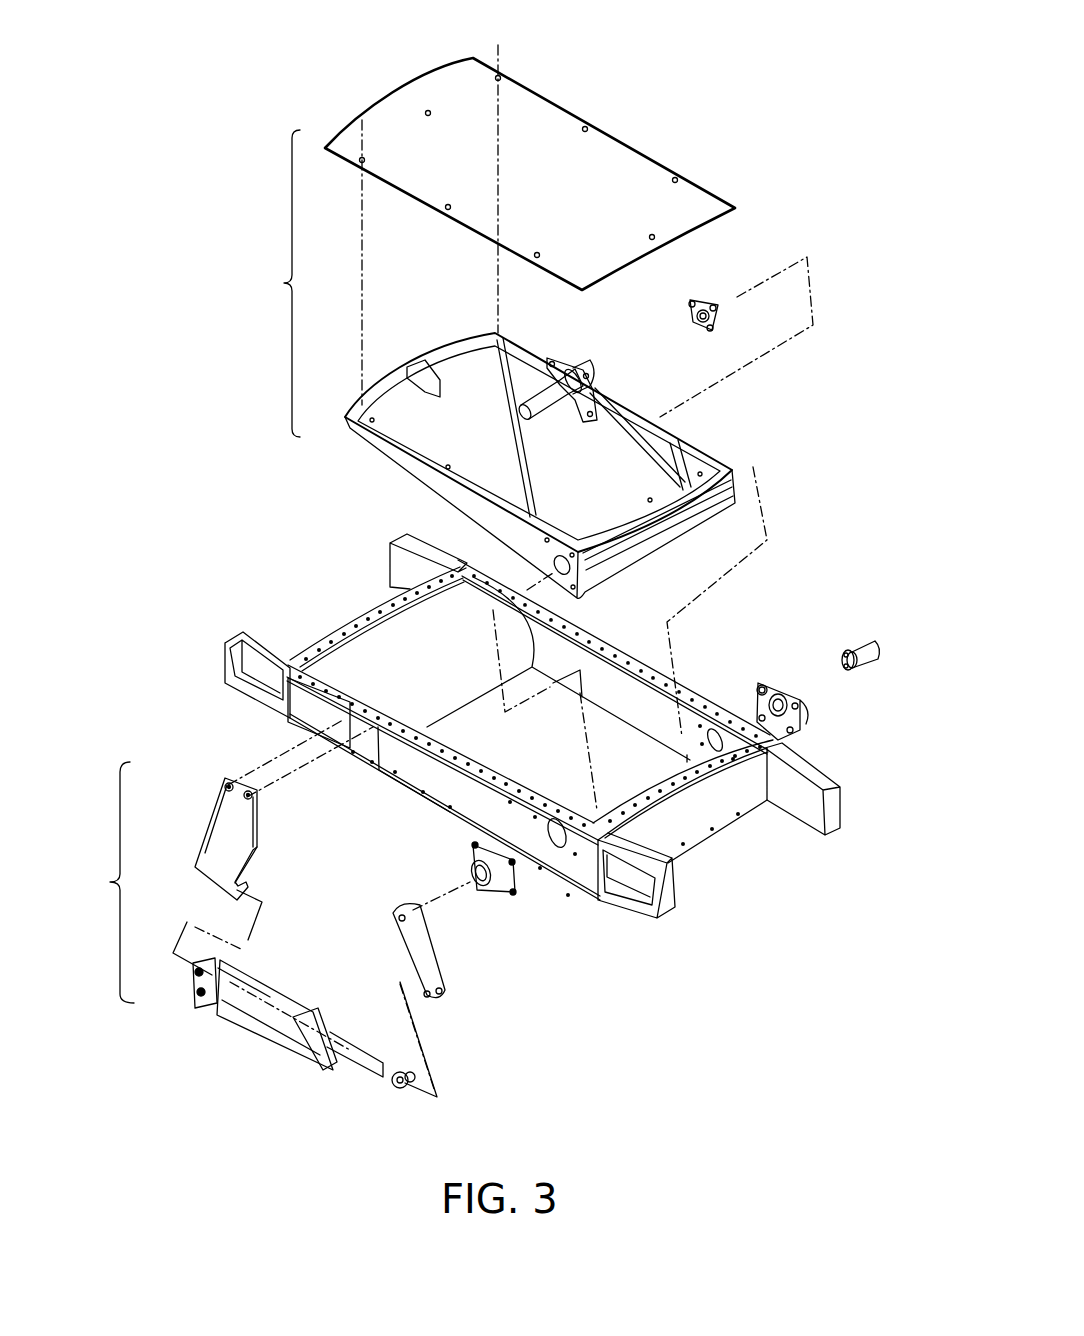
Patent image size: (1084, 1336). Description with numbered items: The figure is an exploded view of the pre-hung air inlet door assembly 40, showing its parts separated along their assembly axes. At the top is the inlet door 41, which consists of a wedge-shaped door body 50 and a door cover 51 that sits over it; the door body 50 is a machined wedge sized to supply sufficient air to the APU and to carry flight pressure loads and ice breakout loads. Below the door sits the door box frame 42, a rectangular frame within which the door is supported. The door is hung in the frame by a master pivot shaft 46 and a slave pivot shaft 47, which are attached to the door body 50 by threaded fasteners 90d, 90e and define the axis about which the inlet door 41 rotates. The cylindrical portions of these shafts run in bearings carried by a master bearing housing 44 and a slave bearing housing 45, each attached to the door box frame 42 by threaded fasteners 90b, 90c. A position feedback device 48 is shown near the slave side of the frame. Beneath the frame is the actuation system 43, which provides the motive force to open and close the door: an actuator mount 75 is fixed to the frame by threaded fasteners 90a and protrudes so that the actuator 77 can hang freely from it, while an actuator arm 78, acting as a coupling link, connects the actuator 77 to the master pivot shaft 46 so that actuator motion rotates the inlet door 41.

The pre-hung air inlet door assembly 40 is at (128, 195).
The inlet door 41 is at (270, 283).
The door box frame 42 is at (243, 640).
The actuation system 43 is at (98, 882).
The master bearing housing 44 is at (520, 884).
The slave bearing housing 45 is at (798, 703).
The master pivot shaft 46 is at (545, 410).
The slave pivot shaft 47 is at (722, 298).
The position feedback device 48 is at (878, 652).
The door body 50 is at (415, 472).
The door cover 51 is at (446, 207).
The actuator mount 75 is at (208, 840).
The actuator 77 is at (278, 996).
The actuator arm 78 is at (410, 950).
The threaded fasteners 90a is at (225, 790).
The threaded fasteners 90b is at (472, 846).
The threaded fasteners 90c is at (768, 690).
The threaded fasteners 90d is at (582, 385).
The threaded fasteners 90e is at (715, 312).